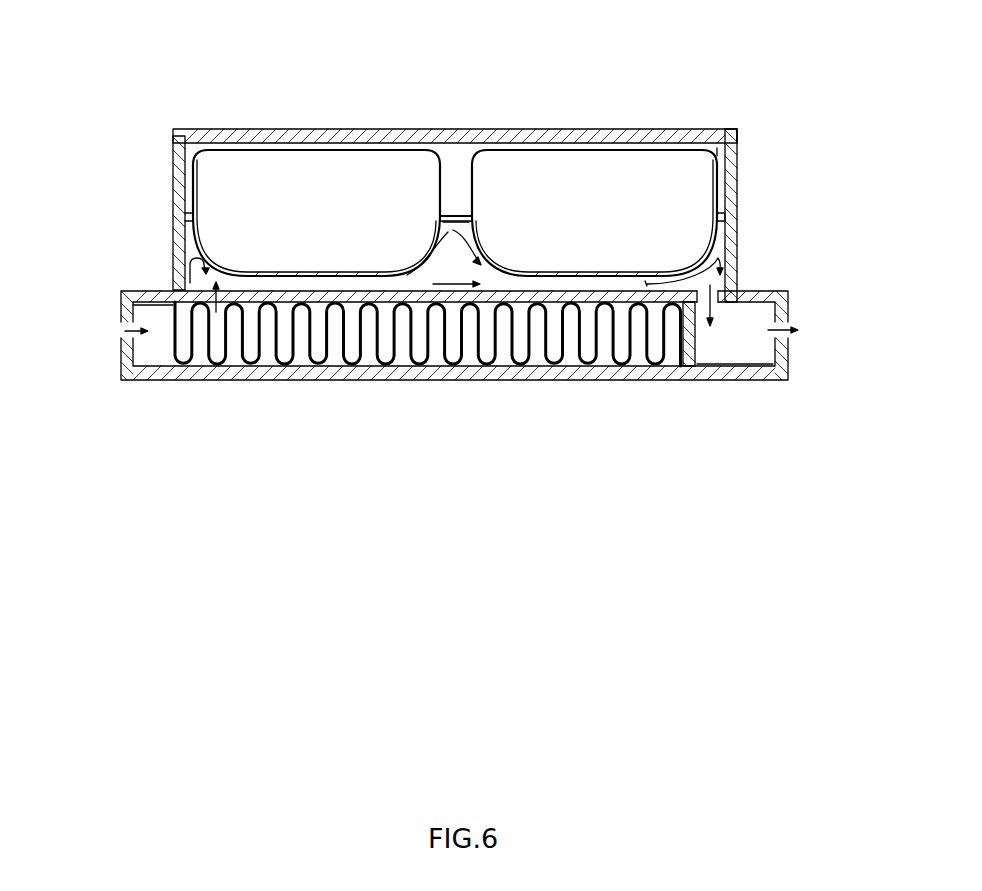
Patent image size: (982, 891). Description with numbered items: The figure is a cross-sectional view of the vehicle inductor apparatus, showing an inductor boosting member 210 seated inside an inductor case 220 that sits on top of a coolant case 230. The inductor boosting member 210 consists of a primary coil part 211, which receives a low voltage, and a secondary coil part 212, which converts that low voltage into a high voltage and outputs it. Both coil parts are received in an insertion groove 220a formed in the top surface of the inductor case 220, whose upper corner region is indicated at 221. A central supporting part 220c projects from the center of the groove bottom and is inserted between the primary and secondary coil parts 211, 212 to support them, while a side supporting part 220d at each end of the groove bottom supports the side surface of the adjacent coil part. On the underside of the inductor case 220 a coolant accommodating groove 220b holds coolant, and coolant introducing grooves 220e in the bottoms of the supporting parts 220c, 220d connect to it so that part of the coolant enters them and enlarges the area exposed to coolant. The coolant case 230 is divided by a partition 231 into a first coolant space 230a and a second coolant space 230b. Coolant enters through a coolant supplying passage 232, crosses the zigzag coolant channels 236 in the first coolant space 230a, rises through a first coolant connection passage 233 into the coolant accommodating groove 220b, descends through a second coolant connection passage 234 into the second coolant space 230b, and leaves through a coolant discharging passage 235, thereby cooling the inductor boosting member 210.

The inductor boosting member 210 is at (520, 53).
The primary coil part 211 is at (338, 160).
The secondary coil part 212 is at (500, 160).
The inductor case 220 is at (732, 200).
The insertion groove 220a is at (727, 150).
The coolant accommodating groove 220b is at (722, 263).
The central supporting part 220c is at (477, 228).
The side supporting part 220d is at (188, 214).
The coolant introducing groove 220e is at (454, 232).
The housing top corner 221 is at (740, 128).
The coolant case 230 is at (783, 310).
The first coolant space 230a is at (202, 336).
The second coolant space 230b is at (740, 334).
The partition 231 is at (696, 346).
The coolant supplying passage 232 is at (121, 328).
The first coolant connection passage 233 is at (200, 283).
The second coolant connection passage 234 is at (718, 302).
The coolant discharging passage 235 is at (790, 335).
The coolant channels 236 is at (580, 342).